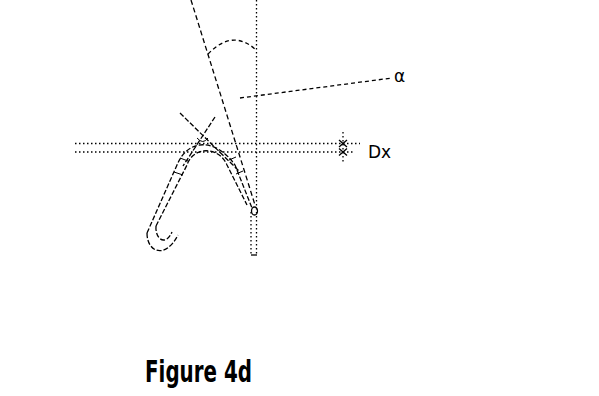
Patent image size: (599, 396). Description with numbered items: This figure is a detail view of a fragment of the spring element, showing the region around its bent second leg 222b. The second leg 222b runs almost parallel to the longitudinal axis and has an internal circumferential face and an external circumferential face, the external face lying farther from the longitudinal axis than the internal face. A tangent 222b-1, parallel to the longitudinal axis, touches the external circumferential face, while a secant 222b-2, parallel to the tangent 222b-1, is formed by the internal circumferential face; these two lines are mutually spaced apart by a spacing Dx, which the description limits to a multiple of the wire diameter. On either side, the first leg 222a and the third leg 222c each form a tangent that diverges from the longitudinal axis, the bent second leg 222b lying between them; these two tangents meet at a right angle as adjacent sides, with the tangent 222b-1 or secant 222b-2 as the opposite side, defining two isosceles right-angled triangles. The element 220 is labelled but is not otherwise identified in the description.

The base 220 is at (258, 244).
The first leg 222a is at (255, 200).
The second leg 222b is at (203, 143).
The tangent 222b-1 is at (120, 143).
The secant 222b-2 is at (321, 146).
The third leg 222c is at (150, 217).